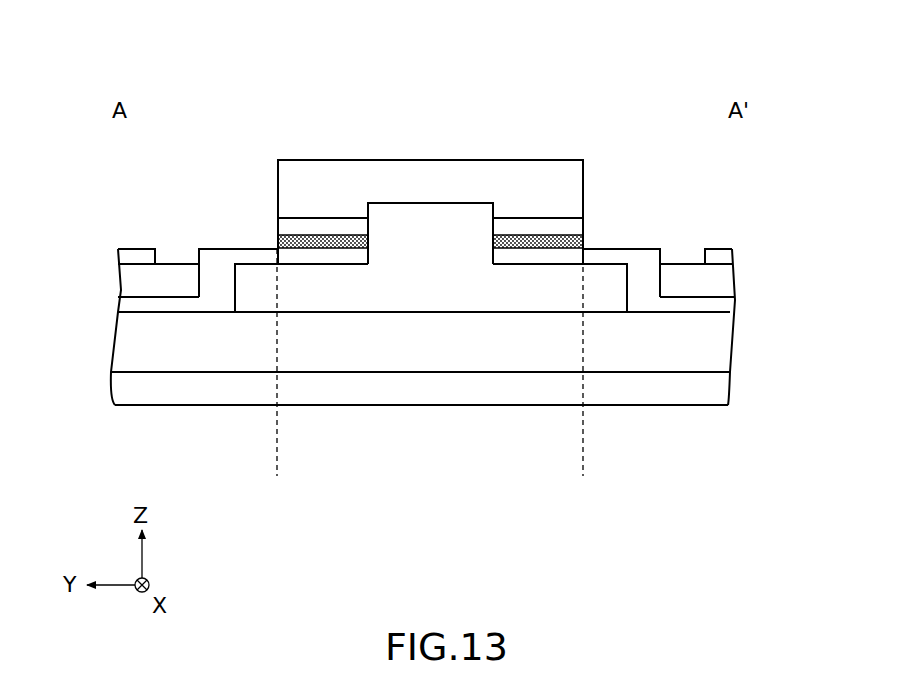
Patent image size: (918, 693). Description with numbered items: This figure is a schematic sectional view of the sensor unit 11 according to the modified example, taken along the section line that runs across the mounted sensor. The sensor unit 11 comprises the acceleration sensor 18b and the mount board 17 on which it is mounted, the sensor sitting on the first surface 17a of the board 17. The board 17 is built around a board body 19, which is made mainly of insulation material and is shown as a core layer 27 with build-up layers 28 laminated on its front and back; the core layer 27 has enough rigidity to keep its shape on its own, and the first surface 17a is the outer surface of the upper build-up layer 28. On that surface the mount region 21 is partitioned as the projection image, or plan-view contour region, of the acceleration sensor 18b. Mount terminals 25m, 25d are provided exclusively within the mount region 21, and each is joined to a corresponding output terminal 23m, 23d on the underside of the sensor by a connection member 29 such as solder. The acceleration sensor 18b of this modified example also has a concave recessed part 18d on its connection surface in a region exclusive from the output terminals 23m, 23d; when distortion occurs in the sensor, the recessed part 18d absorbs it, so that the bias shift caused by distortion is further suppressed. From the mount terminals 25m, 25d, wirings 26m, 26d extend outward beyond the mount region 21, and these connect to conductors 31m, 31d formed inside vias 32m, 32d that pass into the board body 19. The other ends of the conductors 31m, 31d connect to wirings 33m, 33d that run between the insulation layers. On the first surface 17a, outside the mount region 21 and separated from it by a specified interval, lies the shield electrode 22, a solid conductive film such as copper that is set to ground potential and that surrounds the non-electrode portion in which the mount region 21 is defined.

The sensor unit 11 is at (674, 89).
The mount board 17 is at (830, 311).
The first surface 17a is at (680, 262).
The board body 19 is at (793, 263).
The build-up layer 28 is at (727, 278).
The core layer 27 is at (720, 342).
The shield electrode 22 is at (135, 258).
The wiring 26m is at (248, 257).
The wiring 26d is at (608, 255).
The via 32m is at (218, 296).
The via 32d is at (635, 284).
The conductor 31m is at (198, 288).
The conductor 31d is at (657, 284).
The wiring 33m is at (157, 305).
The wiring 33d is at (693, 306).
The mount terminal 25m is at (345, 258).
The mount terminal 25d is at (512, 258).
The acceleration sensor 18b is at (535, 160).
The recessed part 18d is at (428, 217).
The output terminal 23m is at (283, 228).
The output terminal 23d is at (577, 228).
The connection member 29 is at (369, 237).
The mount region 21 is at (583, 470).